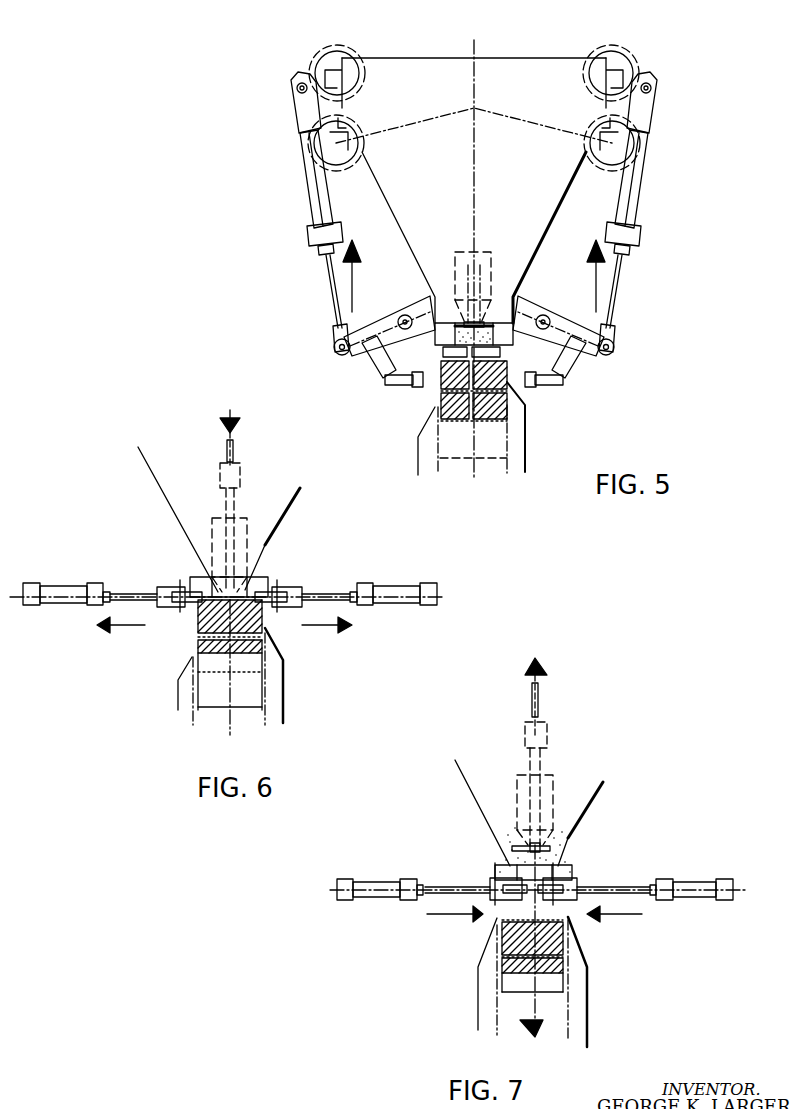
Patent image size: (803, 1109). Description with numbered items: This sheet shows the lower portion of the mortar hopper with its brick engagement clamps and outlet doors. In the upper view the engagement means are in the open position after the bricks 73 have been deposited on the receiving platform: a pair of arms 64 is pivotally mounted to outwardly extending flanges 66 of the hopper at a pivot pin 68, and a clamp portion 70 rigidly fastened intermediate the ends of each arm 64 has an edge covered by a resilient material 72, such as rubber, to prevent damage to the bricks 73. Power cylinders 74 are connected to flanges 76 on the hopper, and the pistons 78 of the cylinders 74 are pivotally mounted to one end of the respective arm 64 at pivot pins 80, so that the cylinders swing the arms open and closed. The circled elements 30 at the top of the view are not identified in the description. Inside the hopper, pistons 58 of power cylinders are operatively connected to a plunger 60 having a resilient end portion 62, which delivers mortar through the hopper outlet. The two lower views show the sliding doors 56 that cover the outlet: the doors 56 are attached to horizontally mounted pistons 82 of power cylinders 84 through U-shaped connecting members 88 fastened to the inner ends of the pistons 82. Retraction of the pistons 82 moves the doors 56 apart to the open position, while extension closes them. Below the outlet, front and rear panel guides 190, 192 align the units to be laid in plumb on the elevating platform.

In FIG. 5, the cutting device 30 is at (333, 45).
In FIG. 5, the sliding doors 56 is at (443, 349).
In FIG. 6, the sliding doors 56 is at (195, 603).
In FIG. 7, the sliding doors 56 is at (527, 900).
In FIG. 6, the pistons 58 is at (240, 446).
In FIG. 7, the pistons 58 is at (530, 700).
In FIG. 5, the plunger 60 is at (462, 258).
In FIG. 6, the plunger 60 is at (247, 528).
In FIG. 7, the plunger 60 is at (553, 800).
In FIG. 5, the resilient end portion 62 is at (483, 322).
In FIG. 7, the resilient end portion 62 is at (518, 843).
In FIG. 5, the arms 64 is at (383, 330).
In FIG. 5, the outwardly extending flanges 66 is at (428, 302).
In FIG. 5, the pivot pin 68 is at (402, 318).
In FIG. 5, the clamp portion 70 is at (377, 354).
In FIG. 5, the resilient material 72 is at (405, 386).
In FIG. 5, the bricks 73 is at (493, 412).
In FIG. 6, the bricks 73 is at (200, 631).
In FIG. 7, the bricks 73 is at (555, 940).
In FIG. 5, the power cylinders 74 is at (312, 178).
In FIG. 5, the flanges 76 is at (295, 91).
In FIG. 5, the pistons 78 is at (330, 273).
In FIG. 5, the pivot pins 80 is at (336, 348).
In FIG. 6, the pistons 82 is at (140, 594).
In FIG. 7, the pistons 82 is at (455, 887).
In FIG. 6, the power cylinders 84 is at (68, 592).
In FIG. 7, the power cylinders 84 is at (385, 882).
In FIG. 6, the U-shaped connecting members 88 is at (175, 589).
In FIG. 7, the U-shaped connecting members 88 is at (497, 878).
In FIG. 5, the front panel guide 190 is at (517, 455).
In FIG. 6, the front panel guide 190 is at (275, 699).
In FIG. 7, the front panel guide 190 is at (578, 1005).
In FIG. 5, the rear panel guide 192 is at (425, 444).
In FIG. 6, the rear panel guide 192 is at (180, 690).
In FIG. 7, the rear panel guide 192 is at (485, 992).